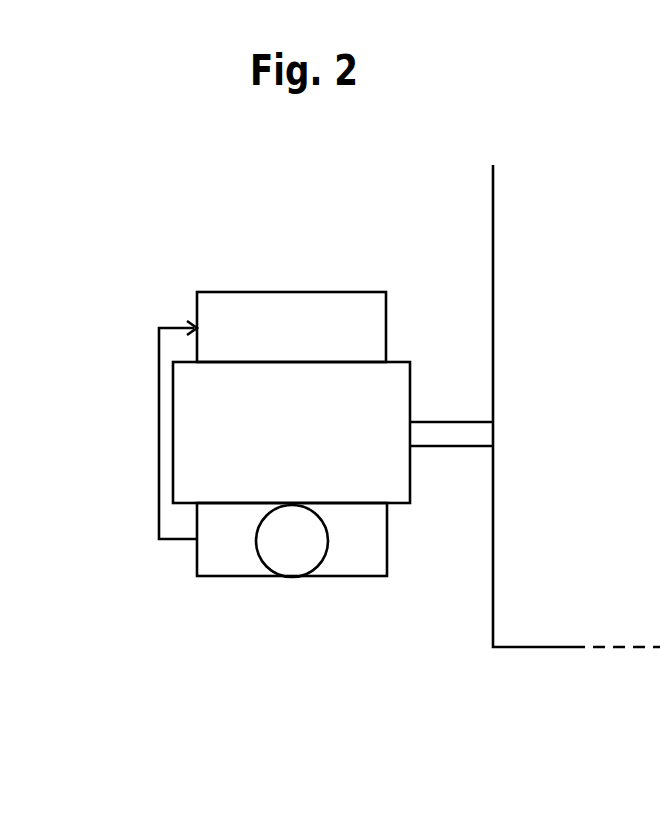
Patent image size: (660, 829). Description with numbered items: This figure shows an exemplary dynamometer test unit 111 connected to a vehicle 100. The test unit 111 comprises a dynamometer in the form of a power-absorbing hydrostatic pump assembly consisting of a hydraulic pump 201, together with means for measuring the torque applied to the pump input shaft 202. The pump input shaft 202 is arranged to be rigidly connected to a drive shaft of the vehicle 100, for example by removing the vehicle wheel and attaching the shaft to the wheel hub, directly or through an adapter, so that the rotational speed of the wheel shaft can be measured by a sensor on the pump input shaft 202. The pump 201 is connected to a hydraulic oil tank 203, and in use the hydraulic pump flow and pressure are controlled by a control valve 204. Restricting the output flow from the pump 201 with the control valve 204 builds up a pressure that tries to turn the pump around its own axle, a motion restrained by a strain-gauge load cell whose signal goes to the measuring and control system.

The vehicle 100 is at (540, 647).
The dynamometer test unit 111 is at (340, 293).
The hydraulic pump 201 is at (197, 455).
The pump input shaft 202 is at (480, 433).
The hydraulic oil tank 203 is at (220, 305).
The control valve 204 is at (292, 563).